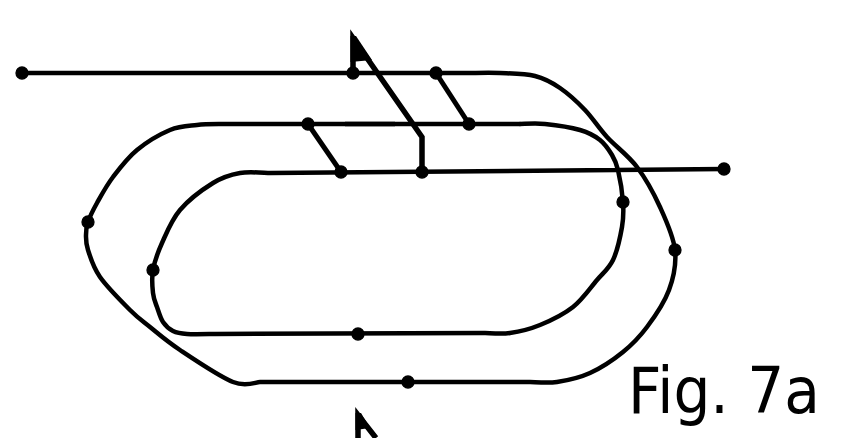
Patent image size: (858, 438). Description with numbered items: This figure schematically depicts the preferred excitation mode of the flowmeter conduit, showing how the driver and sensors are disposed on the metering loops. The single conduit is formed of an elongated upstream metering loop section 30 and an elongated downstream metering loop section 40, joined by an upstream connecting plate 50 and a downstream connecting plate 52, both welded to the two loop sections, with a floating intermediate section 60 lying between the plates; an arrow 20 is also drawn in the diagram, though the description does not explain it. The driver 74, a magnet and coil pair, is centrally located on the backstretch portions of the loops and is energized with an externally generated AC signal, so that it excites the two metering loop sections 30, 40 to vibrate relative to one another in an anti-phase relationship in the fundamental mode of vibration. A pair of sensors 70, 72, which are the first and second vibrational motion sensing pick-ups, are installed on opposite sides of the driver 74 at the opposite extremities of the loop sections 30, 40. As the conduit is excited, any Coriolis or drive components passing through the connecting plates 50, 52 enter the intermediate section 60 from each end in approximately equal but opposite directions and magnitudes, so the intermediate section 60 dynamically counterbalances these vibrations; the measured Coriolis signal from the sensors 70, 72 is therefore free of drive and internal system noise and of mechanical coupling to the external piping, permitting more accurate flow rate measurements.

The flow direction arrow 20 is at (396, 98).
The upstream metering loop section 30 is at (195, 370).
The downstream metering loop section 40 is at (117, 153).
The upstream connecting plate 50 is at (321, 155).
The downstream connecting plate 52 is at (449, 93).
The floating intermediate section 60 is at (373, 126).
The sensor 70 is at (86, 230).
The sensor 72 is at (682, 253).
The driver 74 is at (416, 386).